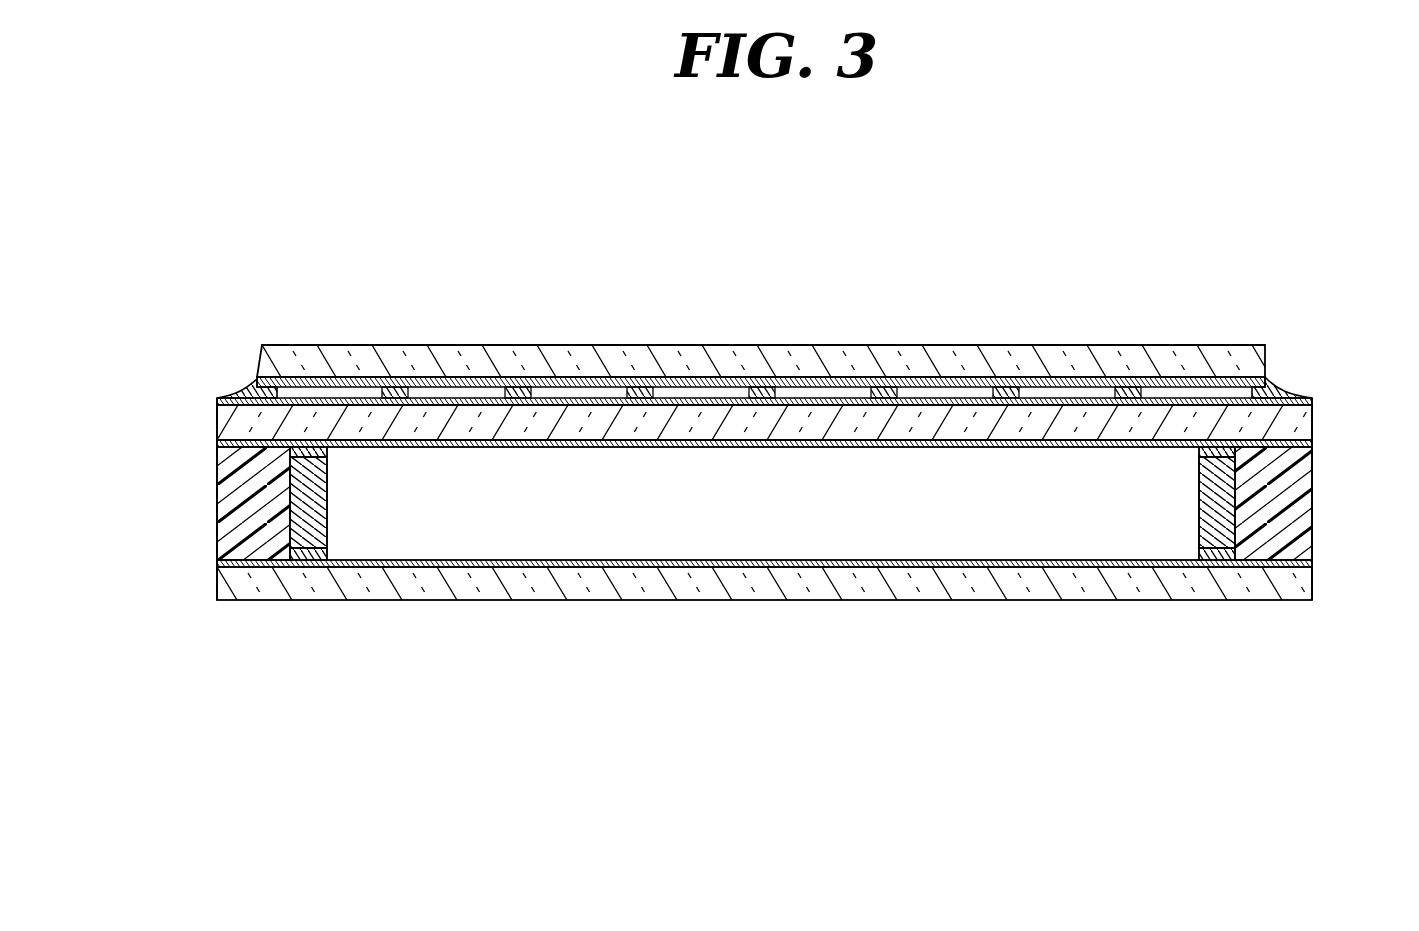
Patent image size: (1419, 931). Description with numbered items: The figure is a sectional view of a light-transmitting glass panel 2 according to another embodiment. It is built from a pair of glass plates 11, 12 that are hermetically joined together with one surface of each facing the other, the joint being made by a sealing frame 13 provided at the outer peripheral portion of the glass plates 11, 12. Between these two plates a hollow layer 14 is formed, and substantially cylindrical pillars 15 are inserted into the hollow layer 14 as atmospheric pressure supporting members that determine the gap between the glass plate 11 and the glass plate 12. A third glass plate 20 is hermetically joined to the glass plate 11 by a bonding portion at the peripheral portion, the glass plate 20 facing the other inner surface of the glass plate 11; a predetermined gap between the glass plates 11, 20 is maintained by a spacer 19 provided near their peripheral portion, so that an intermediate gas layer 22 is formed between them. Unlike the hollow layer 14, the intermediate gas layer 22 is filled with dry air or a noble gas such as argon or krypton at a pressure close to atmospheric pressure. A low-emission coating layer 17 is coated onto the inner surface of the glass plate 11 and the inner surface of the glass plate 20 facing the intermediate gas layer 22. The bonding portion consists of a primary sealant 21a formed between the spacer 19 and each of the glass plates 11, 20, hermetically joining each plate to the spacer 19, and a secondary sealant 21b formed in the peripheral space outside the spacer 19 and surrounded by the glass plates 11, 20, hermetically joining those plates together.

The light-transmitting glass panel 2 is at (886, 278).
The glass plate 11 is at (940, 410).
The glass plate 12 is at (760, 352).
The sealing frame 13 is at (252, 383).
The hollow layer 14 is at (467, 393).
The pillars 15 is at (628, 389).
The low-emission coating layer 17 is at (1088, 403).
The spacer 19 is at (327, 497).
The glass plate 20 is at (801, 592).
The primary sealant 21a is at (327, 452).
The secondary sealant 21b is at (217, 522).
The intermediate gas layer 22 is at (878, 518).